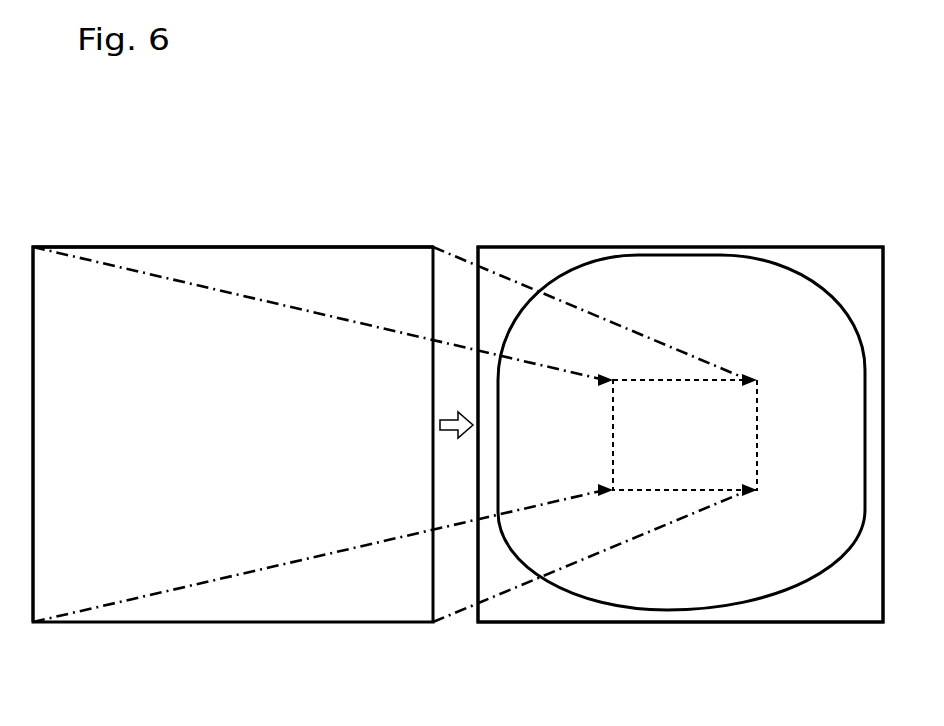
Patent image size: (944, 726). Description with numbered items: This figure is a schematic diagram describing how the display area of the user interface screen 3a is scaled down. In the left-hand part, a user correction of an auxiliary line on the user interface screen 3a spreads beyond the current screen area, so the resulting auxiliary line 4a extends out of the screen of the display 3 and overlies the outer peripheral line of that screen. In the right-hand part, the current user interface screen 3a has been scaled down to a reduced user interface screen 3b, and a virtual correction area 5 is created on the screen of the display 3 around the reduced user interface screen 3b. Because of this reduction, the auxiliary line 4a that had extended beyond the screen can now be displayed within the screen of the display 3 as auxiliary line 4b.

The display 3 is at (203, 622).
The user interface screen 3a is at (183, 247).
The reduced user interface screen 3b is at (688, 380).
The auxiliary line 4a is at (142, 250).
The auxiliary line 4b is at (586, 281).
The virtual correction area 5 is at (798, 410).